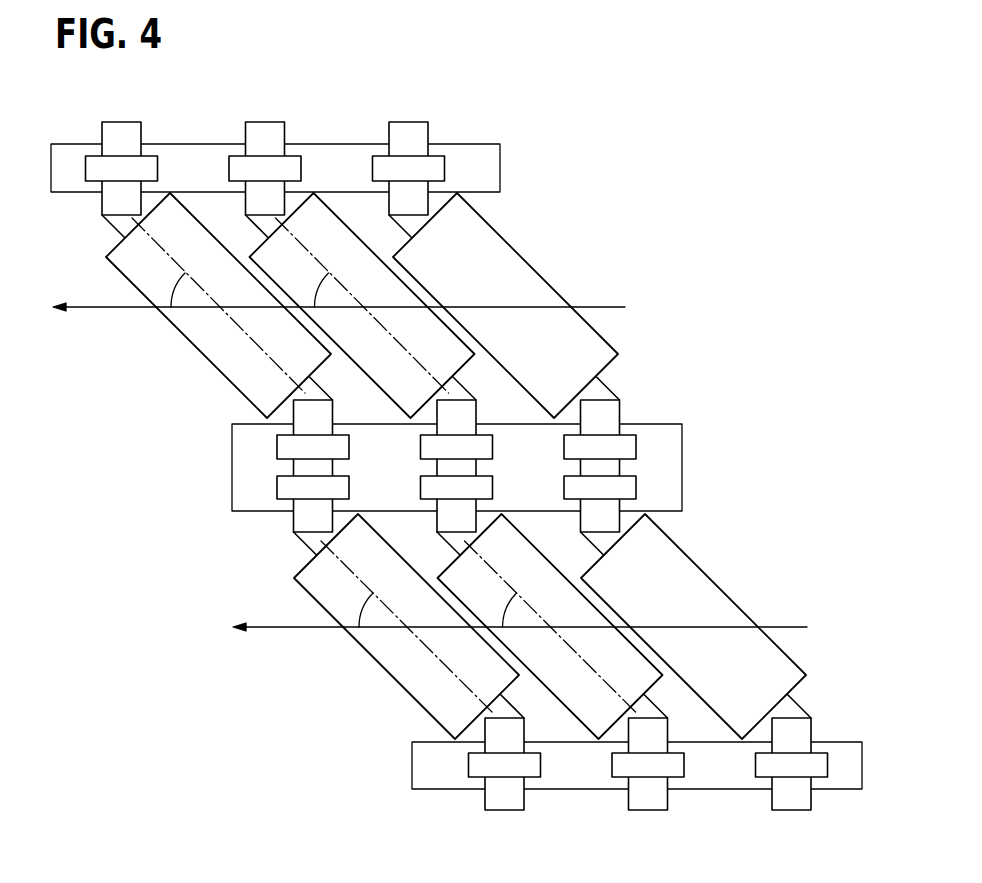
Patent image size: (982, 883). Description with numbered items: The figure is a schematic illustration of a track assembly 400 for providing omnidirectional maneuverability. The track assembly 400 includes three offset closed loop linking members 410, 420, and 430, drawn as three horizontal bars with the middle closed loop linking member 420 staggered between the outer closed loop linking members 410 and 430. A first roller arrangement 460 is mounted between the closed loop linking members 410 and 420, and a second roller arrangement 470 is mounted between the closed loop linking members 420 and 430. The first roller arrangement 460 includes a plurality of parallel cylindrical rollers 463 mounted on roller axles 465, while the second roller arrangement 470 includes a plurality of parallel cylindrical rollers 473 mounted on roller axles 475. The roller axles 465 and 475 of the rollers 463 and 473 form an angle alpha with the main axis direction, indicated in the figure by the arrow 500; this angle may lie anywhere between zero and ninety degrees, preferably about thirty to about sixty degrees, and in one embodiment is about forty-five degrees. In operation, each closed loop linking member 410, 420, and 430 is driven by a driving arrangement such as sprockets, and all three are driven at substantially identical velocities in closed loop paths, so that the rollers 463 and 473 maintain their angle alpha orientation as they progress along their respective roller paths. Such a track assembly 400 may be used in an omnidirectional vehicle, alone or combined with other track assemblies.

The track assembly 400 is at (123, 482).
The closed loop linking member 410 is at (423, 789).
The closed loop linking member 420 is at (243, 512).
The closed loop linking member 430 is at (63, 193).
The first roller arrangement 460 is at (562, 626).
The cylindrical rollers 463 is at (775, 659).
The roller axles 465 is at (792, 709).
The second roller arrangement 470 is at (374, 305).
The cylindrical rollers 473 is at (587, 338).
The roller axles 475 is at (602, 390).
The conveying direction 500 is at (430, 457).